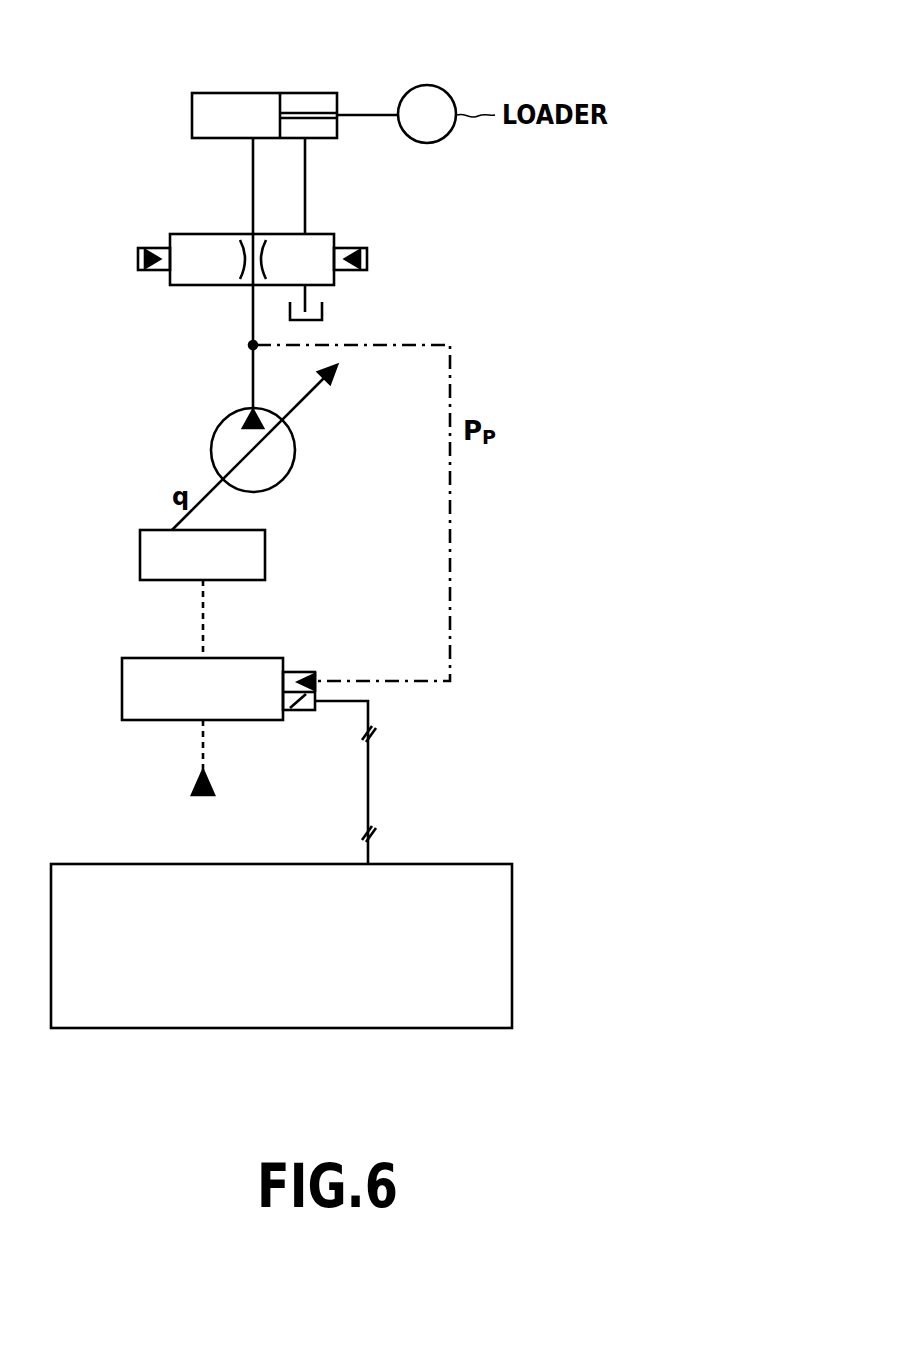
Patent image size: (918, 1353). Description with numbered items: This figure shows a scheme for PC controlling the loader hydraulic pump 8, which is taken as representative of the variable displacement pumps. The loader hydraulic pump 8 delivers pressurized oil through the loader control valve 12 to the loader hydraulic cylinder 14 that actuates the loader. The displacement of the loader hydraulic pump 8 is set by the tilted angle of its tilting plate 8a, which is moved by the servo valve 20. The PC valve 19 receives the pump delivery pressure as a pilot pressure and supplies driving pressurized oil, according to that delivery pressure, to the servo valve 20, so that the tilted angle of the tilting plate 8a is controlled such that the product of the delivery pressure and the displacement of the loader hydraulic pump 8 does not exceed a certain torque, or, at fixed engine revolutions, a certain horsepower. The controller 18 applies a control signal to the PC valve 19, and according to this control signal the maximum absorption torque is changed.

The loader hydraulic cylinder 14 is at (222, 93).
The loader control valve 12 is at (325, 234).
The loader hydraulic pump 8 is at (232, 412).
The tilting plate 8a is at (330, 376).
The servo valve 20 is at (265, 543).
The PC valve 19 is at (270, 658).
The controller 18 is at (460, 864).